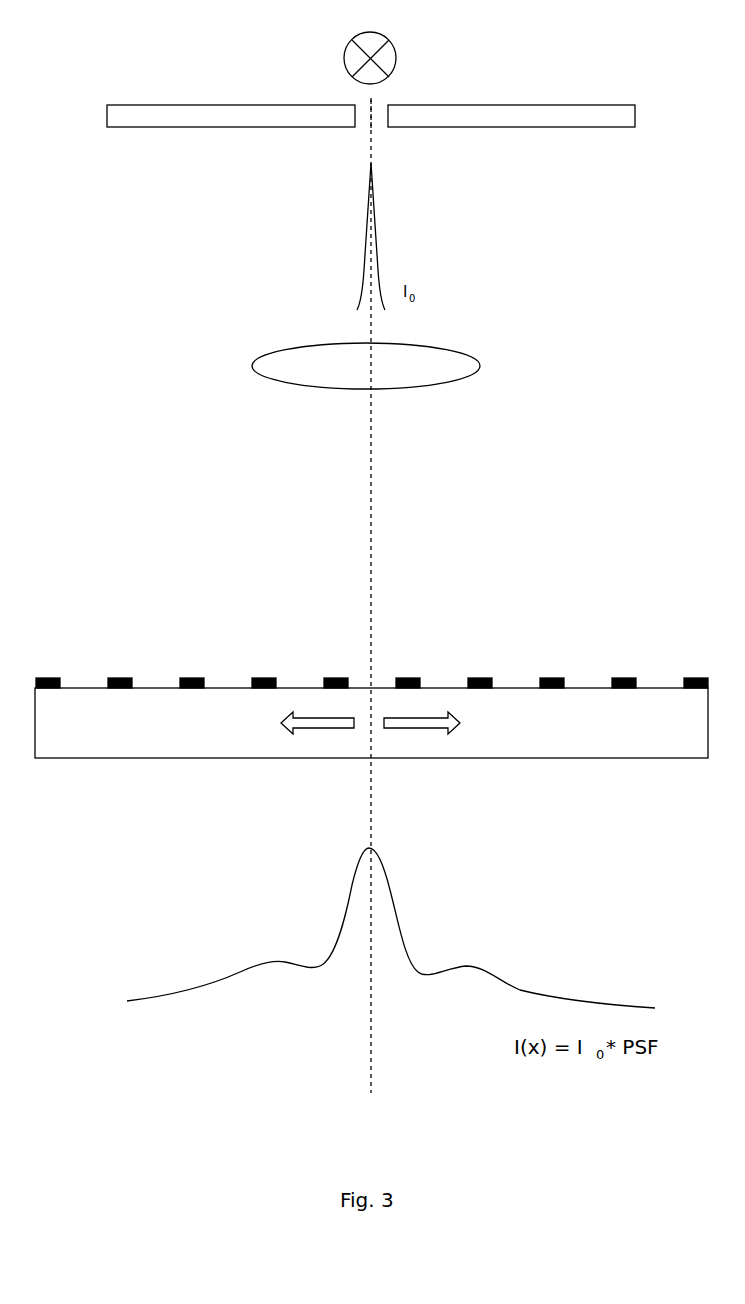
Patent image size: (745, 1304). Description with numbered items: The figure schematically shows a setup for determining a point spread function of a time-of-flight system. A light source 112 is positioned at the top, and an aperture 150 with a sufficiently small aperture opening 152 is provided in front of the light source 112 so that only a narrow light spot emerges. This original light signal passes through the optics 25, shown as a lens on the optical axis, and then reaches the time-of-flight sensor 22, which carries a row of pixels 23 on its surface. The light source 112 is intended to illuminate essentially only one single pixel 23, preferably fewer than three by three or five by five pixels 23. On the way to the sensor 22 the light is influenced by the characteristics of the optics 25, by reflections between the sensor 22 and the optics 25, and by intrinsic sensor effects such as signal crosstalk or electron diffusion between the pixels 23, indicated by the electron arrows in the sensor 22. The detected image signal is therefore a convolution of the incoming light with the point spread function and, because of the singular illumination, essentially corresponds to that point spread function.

The light source 112 is at (296, 48).
The aperture 150 is at (610, 112).
The aperture opening 152 is at (461, 72).
The optics 25 is at (296, 357).
The pixels 23 is at (372, 603).
The time-of-flight sensor 22 is at (371, 723).